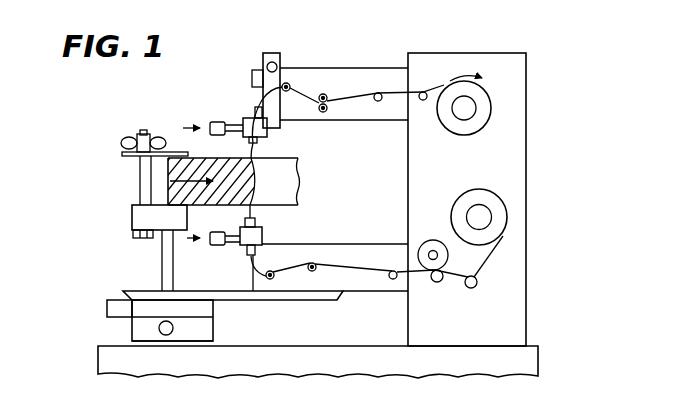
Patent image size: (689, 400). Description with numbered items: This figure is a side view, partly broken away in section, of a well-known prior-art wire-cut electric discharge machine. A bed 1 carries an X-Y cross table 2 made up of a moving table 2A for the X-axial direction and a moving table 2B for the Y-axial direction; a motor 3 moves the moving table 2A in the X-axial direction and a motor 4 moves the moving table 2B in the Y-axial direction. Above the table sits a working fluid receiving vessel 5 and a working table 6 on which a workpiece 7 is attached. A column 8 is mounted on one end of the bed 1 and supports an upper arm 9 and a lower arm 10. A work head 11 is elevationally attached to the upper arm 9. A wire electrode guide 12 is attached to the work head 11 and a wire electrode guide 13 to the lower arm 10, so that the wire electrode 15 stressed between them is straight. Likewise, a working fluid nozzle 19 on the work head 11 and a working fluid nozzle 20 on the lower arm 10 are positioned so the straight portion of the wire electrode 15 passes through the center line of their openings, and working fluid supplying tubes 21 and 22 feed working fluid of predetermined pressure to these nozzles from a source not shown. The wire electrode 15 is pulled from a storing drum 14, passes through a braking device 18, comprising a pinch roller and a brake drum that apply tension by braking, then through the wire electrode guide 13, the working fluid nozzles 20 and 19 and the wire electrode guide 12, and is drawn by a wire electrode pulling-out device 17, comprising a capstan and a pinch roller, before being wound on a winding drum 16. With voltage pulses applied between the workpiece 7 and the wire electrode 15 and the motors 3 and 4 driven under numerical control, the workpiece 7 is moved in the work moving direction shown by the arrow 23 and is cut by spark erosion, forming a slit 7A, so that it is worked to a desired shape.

The bed 1 is at (290, 358).
The X-Y cross table 2 is at (102, 290).
The moving table 2A is at (132, 328).
The moving table 2B is at (205, 307).
The motor 3 is at (166, 336).
The motor 4 is at (107, 308).
The working fluid receiving vessel 5 is at (298, 300).
The working table 6 is at (133, 220).
The workpiece 7 is at (212, 163).
The slit 7A is at (280, 177).
The column 8 is at (507, 137).
The upper arm 9 is at (327, 78).
The lower arm 10 is at (355, 252).
The work head 11 is at (268, 54).
The wire electrode guide 12 is at (258, 108).
The wire electrode guide 13 is at (252, 258).
The storing drum 14 is at (503, 220).
The wire electrode 15 is at (427, 92).
The winding drum 16 is at (492, 105).
The wire electrode pulling-out device 17 is at (330, 98).
The braking device 18 is at (432, 268).
The working fluid nozzle 19 is at (270, 133).
The working fluid nozzle 20 is at (263, 235).
The working fluid supplying tube 21 is at (213, 122).
The working fluid supplying tube 22 is at (217, 247).
The arrow 23 is at (182, 169).